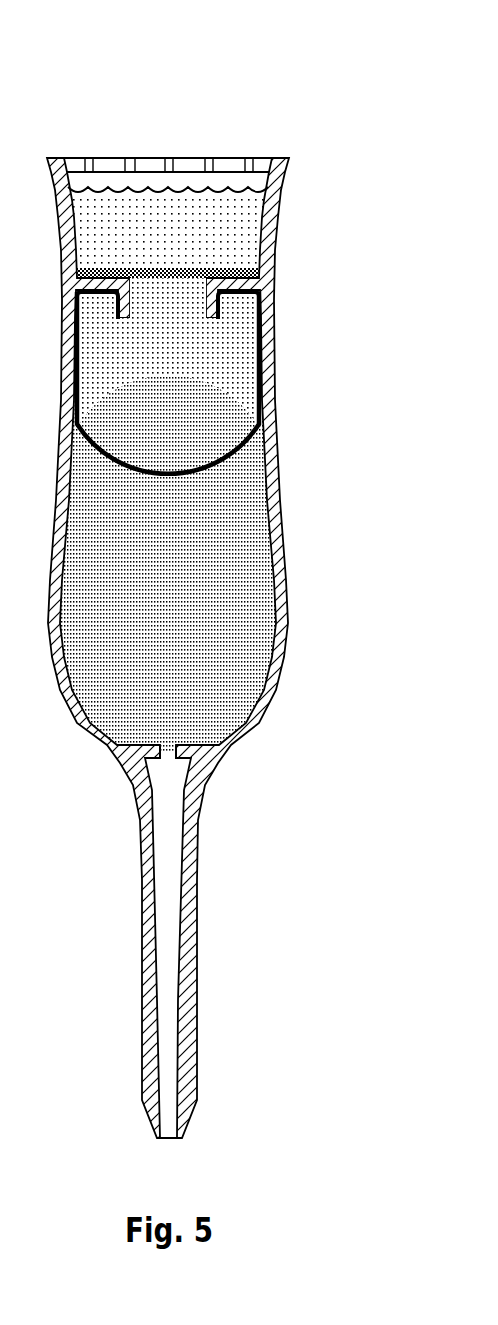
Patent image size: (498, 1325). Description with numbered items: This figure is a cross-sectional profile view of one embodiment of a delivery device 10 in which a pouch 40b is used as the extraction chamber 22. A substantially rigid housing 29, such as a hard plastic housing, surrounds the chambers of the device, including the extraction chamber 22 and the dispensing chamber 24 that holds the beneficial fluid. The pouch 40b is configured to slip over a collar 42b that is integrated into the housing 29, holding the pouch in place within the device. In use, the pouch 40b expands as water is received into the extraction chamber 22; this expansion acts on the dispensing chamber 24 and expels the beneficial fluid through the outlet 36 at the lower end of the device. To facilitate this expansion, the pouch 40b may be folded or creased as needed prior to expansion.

The delivery device 10 is at (82, 77).
The extraction chamber 22 is at (233, 368).
The dispensing chamber 24 is at (243, 553).
The housing 29 is at (272, 470).
The outlet 36 is at (168, 750).
The pouch 40b is at (255, 426).
The collar 42b is at (220, 306).